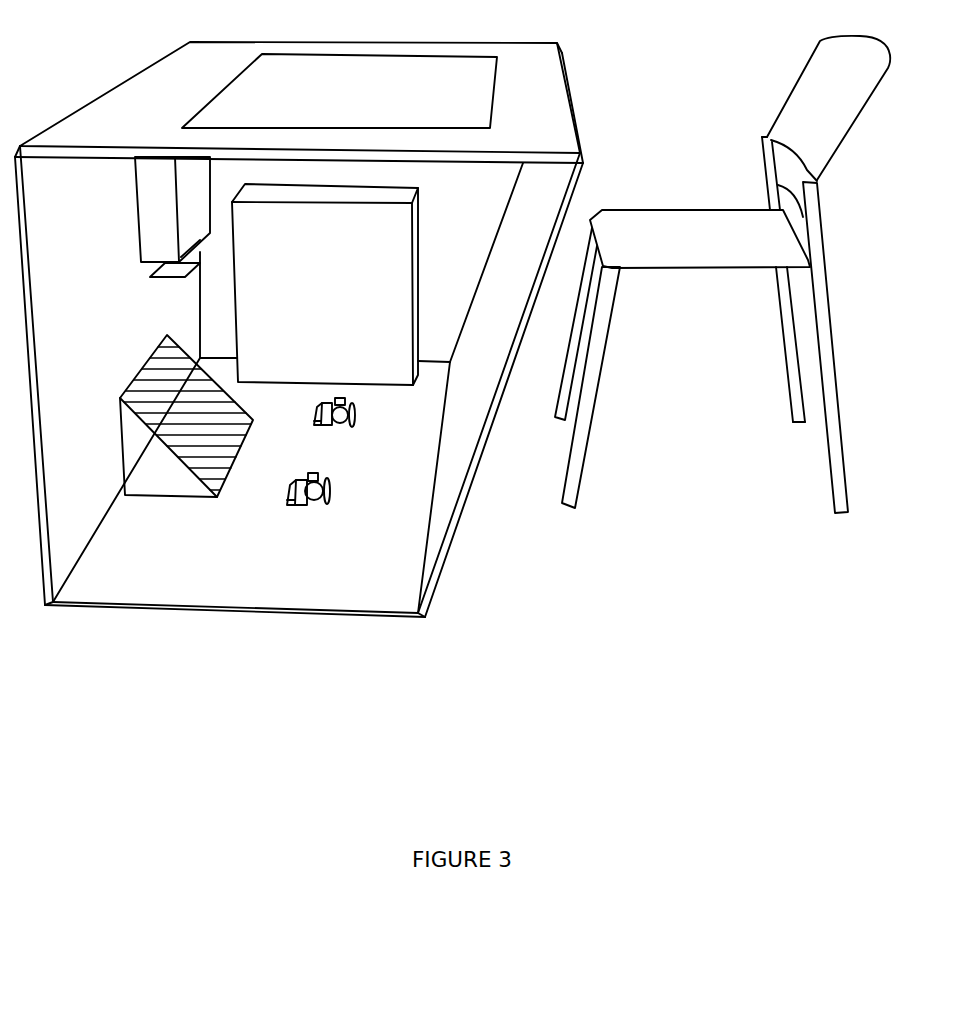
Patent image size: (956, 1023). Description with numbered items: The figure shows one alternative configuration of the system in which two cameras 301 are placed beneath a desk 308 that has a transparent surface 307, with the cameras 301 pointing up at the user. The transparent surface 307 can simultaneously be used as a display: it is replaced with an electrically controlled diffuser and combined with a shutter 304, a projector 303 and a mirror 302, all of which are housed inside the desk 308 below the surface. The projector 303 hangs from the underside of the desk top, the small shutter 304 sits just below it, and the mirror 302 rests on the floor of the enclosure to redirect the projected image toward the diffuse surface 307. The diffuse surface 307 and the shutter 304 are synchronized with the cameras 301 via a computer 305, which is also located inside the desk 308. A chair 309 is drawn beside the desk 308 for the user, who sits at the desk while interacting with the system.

The cameras 301 is at (321, 464).
The mirror 302 is at (186, 416).
The projector 303 is at (152, 209).
The shutter 304 is at (175, 282).
The computer 305 is at (325, 284).
The transparent surface 307 is at (339, 91).
The desk 308 is at (299, 329).
The chair 309 is at (722, 274).